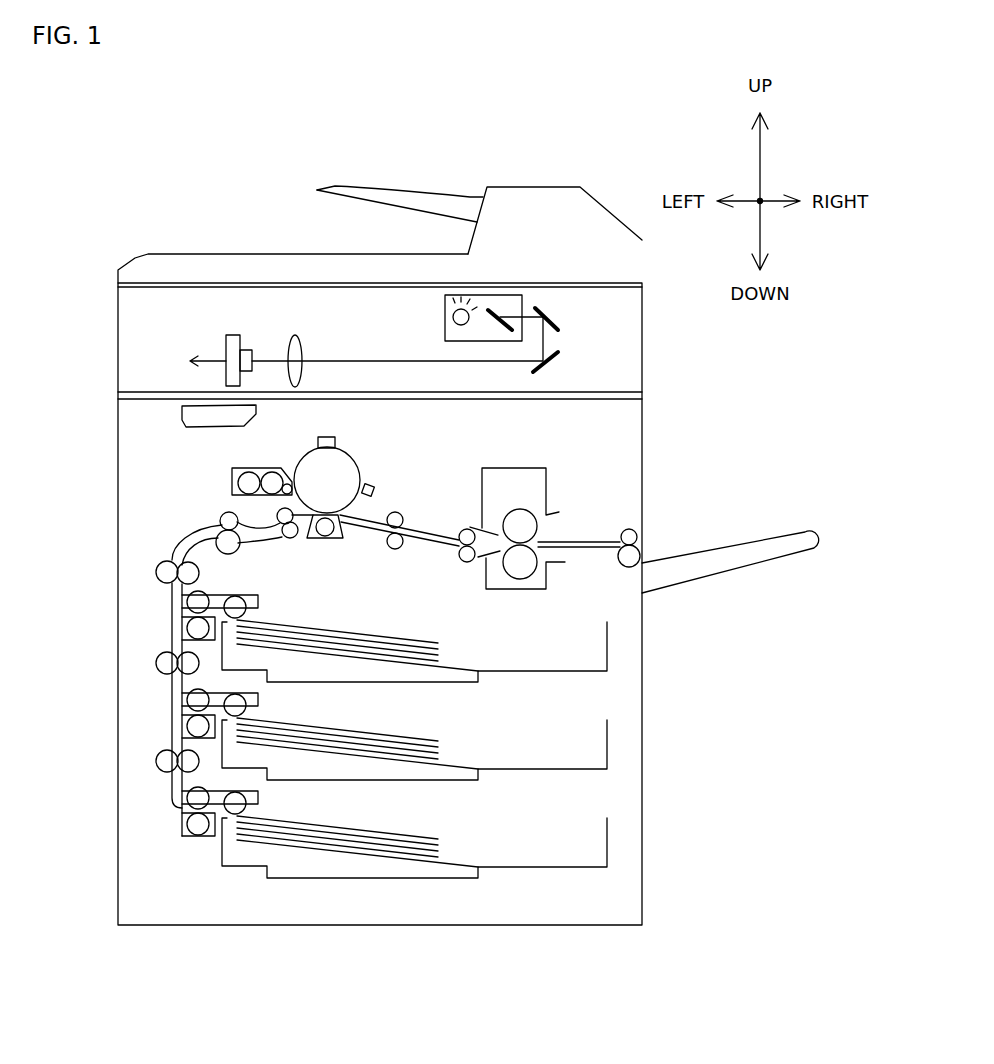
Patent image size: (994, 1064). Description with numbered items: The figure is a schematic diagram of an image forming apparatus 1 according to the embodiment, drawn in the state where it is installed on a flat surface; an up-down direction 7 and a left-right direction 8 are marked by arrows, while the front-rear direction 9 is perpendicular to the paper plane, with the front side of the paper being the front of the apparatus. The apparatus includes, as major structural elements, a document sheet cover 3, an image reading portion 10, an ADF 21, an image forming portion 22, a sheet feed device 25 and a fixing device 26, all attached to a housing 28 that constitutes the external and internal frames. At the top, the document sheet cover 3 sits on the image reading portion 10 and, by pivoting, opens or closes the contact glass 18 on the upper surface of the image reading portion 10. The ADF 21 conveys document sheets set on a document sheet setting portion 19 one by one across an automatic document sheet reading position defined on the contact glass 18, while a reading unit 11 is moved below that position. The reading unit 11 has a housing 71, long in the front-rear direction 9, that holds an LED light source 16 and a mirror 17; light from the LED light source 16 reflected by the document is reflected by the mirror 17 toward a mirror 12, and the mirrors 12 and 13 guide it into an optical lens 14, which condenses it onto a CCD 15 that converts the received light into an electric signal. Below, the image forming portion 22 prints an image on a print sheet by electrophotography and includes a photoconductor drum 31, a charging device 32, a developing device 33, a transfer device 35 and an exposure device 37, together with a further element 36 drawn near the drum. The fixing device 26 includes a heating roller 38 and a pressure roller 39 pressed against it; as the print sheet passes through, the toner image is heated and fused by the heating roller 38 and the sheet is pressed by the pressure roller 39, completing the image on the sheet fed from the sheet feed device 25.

The image forming apparatus 1 is at (143, 972).
The document sheet cover 3 is at (138, 258).
The up-down direction 7 is at (758, 153).
The left-right direction 8 is at (752, 200).
The front-rear direction 9 is at (762, 199).
The image reading portion 10 is at (118, 328).
The reading unit 11 is at (406, 331).
The mirror 12 is at (560, 320).
The mirror 13 is at (560, 362).
The optical lens 14 is at (297, 340).
The CCD 15 is at (238, 335).
The LED light source 16 is at (455, 323).
The mirror 17 is at (497, 310).
The contact glass 18 is at (188, 283).
The document sheet setting portion 19 is at (407, 192).
The ADF 21 is at (558, 187).
The image forming portion 22 is at (364, 556).
The sheet feed device 25 is at (463, 683).
The fixing device 26 is at (528, 459).
The housing 28 is at (118, 520).
The photoconductor drum 31 is at (350, 455).
The charging device 32 is at (322, 437).
The developing device 33 is at (232, 483).
The transfer device 35 is at (318, 540).
The cleaning unit 36 is at (380, 485).
The exposure device 37 is at (182, 410).
The heating roller 38 is at (532, 510).
The pressure roller 39 is at (528, 580).
The housing 71 is at (445, 306).